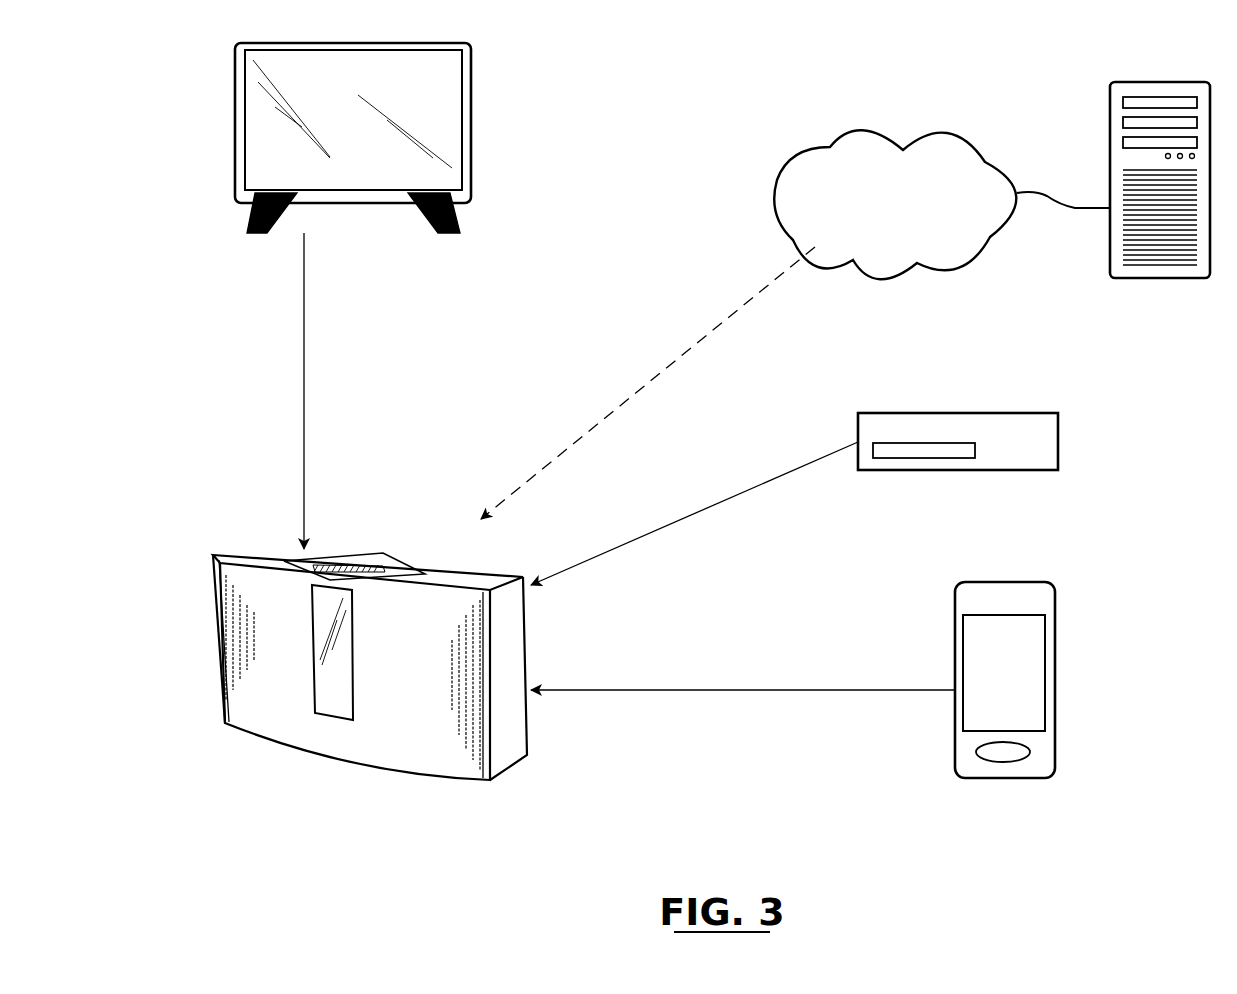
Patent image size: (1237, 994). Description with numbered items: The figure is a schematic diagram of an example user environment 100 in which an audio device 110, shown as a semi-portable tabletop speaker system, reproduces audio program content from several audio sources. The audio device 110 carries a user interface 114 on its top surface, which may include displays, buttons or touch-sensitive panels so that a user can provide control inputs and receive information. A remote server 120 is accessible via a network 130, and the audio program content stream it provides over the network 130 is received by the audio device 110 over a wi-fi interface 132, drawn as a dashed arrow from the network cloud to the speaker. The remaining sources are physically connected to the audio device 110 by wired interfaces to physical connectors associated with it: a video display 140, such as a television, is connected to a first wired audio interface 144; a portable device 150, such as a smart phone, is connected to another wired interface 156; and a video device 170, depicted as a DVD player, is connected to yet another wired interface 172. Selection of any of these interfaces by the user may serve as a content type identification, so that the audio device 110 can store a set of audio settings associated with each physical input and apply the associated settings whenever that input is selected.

The user environment 100 is at (222, 303).
The audio device 110 is at (218, 643).
The user interface 114 is at (375, 550).
The remote server 120 is at (1158, 82).
The network 130 is at (935, 133).
The wi-fi interface 132 is at (648, 383).
The video display 140 is at (471, 140).
The first wired audio interface 144 is at (330, 391).
The portable device 150 is at (1055, 622).
The wired interface 156 is at (743, 672).
The video device 170 is at (1058, 431).
The wired interface 172 is at (694, 513).